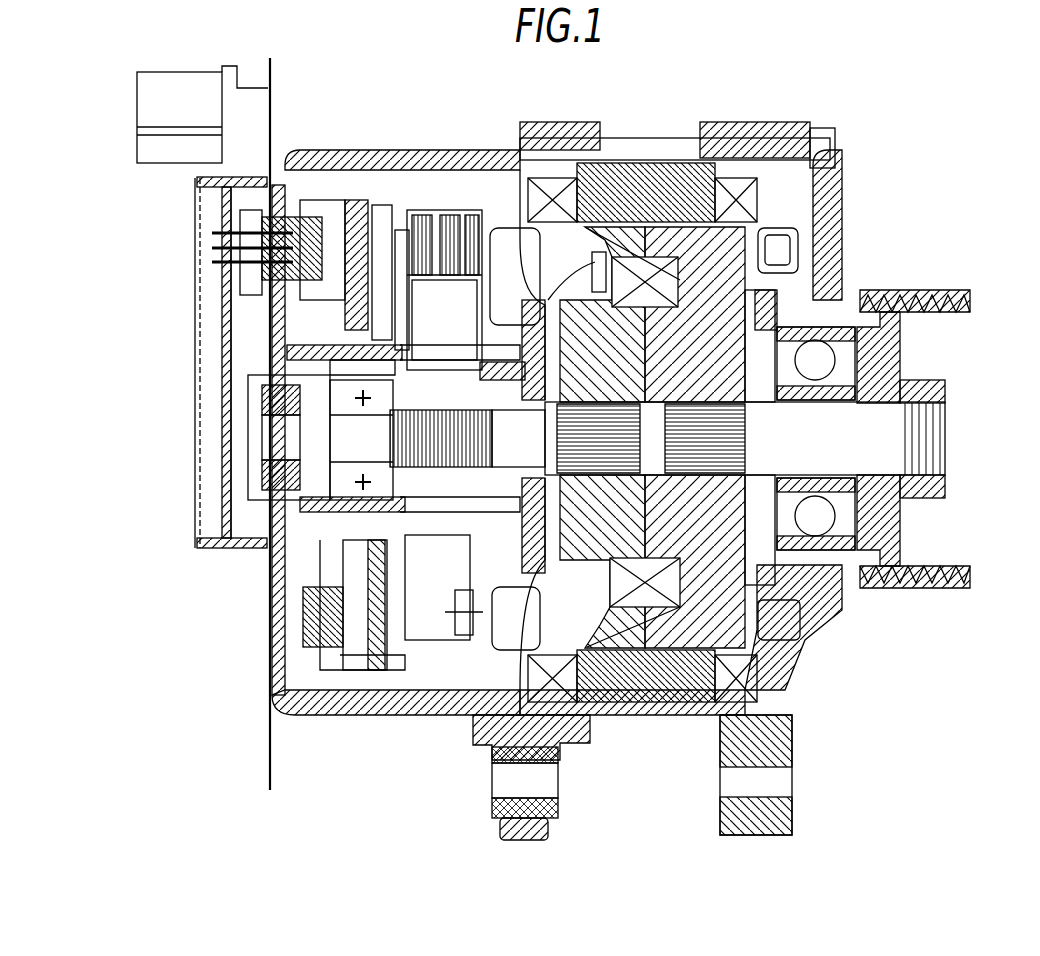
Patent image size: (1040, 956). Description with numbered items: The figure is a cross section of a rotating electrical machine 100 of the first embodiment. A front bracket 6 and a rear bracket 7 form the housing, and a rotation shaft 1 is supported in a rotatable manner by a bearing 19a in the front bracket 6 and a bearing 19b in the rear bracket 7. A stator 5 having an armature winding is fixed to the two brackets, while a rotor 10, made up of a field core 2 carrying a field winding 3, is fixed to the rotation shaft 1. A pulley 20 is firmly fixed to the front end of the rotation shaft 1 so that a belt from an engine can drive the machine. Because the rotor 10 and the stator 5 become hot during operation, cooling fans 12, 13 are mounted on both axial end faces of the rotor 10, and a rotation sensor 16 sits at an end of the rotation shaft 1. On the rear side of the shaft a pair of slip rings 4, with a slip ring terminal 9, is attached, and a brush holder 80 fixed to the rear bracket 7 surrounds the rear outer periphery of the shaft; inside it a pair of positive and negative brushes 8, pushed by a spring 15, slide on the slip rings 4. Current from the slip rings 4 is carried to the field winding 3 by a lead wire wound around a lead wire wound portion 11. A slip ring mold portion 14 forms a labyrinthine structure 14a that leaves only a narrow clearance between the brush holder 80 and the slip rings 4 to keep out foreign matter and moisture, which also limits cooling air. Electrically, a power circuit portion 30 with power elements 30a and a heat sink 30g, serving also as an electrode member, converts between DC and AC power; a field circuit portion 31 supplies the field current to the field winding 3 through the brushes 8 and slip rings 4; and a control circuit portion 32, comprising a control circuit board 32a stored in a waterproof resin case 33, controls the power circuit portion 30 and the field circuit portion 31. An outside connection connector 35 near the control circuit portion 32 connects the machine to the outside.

The rotating electrical machine 100 is at (78, 222).
The rotation shaft 1 is at (845, 432).
The field core 2 is at (590, 357).
The field winding 3 is at (700, 275).
The slip ring 4 is at (400, 518).
The stator 5 is at (656, 182).
The front bracket 6 is at (762, 130).
The rear bracket 7 is at (562, 132).
The brush 8 is at (447, 300).
The brush holder 80 is at (410, 280).
The slip ring terminal 9 is at (450, 565).
The rotor 10 is at (940, 204).
The lead wire wound portion 11 is at (420, 650).
The cooling fan 12 is at (462, 650).
The cooling fan 13 is at (790, 615).
The slip ring mold portion 14 is at (430, 535).
The labyrinthine structure 14a is at (490, 528).
The spring 15 is at (250, 231).
The rotation sensor 16 is at (195, 427).
The bearing 19a is at (830, 540).
The bearing 19b is at (195, 470).
The pulley 20 is at (930, 575).
The power circuit portion 30 is at (112, 692).
The power element 30a is at (430, 615).
The heat sink 30g is at (400, 645).
The field circuit portion 31 is at (360, 225).
The control circuit portion 32 is at (195, 362).
The control circuit board 32a is at (195, 298).
The resin case 33 is at (195, 247).
The outside connection connector 35 is at (175, 98).